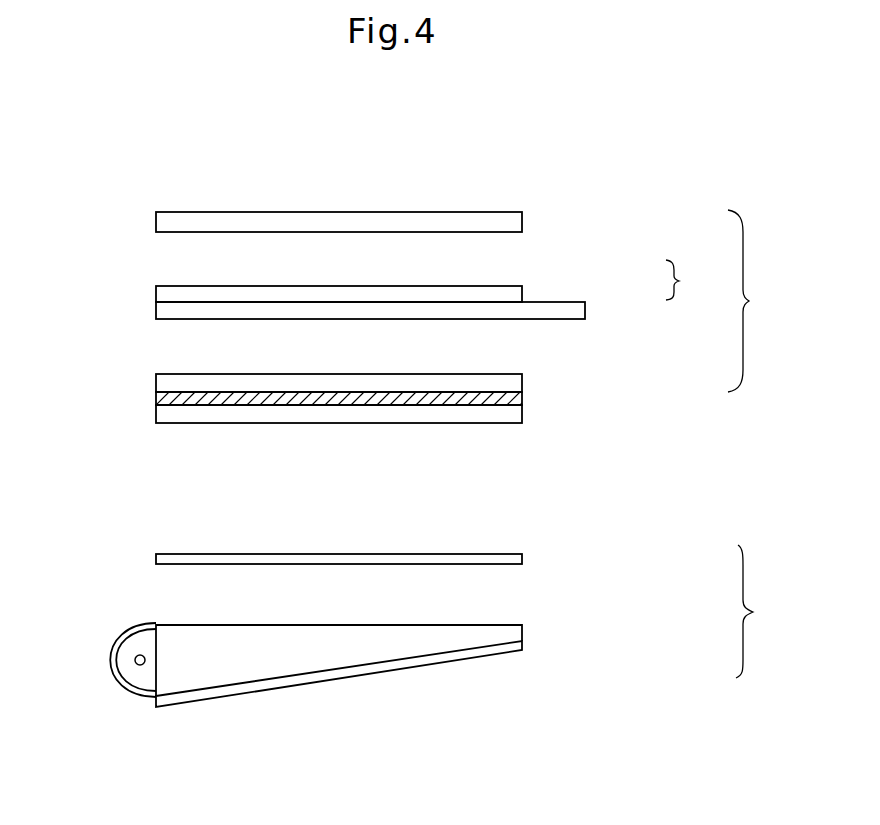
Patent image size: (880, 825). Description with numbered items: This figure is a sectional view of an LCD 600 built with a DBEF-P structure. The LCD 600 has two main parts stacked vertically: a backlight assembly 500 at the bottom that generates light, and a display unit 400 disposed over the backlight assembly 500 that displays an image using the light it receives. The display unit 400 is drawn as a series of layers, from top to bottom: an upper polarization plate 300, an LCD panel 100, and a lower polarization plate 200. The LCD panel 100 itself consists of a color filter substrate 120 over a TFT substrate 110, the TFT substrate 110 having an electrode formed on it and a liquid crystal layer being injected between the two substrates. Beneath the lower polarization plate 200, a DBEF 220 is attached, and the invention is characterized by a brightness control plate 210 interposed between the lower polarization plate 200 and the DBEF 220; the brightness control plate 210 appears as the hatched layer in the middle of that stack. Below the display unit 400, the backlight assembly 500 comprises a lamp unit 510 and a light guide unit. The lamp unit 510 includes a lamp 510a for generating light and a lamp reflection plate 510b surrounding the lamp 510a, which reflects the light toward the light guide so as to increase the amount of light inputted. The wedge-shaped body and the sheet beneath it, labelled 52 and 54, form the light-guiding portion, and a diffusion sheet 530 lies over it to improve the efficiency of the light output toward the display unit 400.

The LCD 600 is at (505, 157).
The display unit 400 is at (764, 301).
The upper polarization plate 300 is at (522, 222).
The LCD panel 100 is at (441, 287).
The color filter substrate 120 is at (522, 297).
The TFT substrate 110 is at (585, 313).
The lower polarization plate 200 is at (522, 382).
The brightness control plate 210 is at (155, 395).
The DBEF 220 is at (522, 412).
The backlight assembly 500 is at (415, 666).
The diffusion sheet 530 is at (522, 559).
The light guide plate 52 is at (522, 630).
The reflective sheet 54 is at (522, 647).
The lamp unit 510 is at (92, 705).
The lamp 510a is at (135, 661).
The lamp reflection plate 510b is at (125, 697).